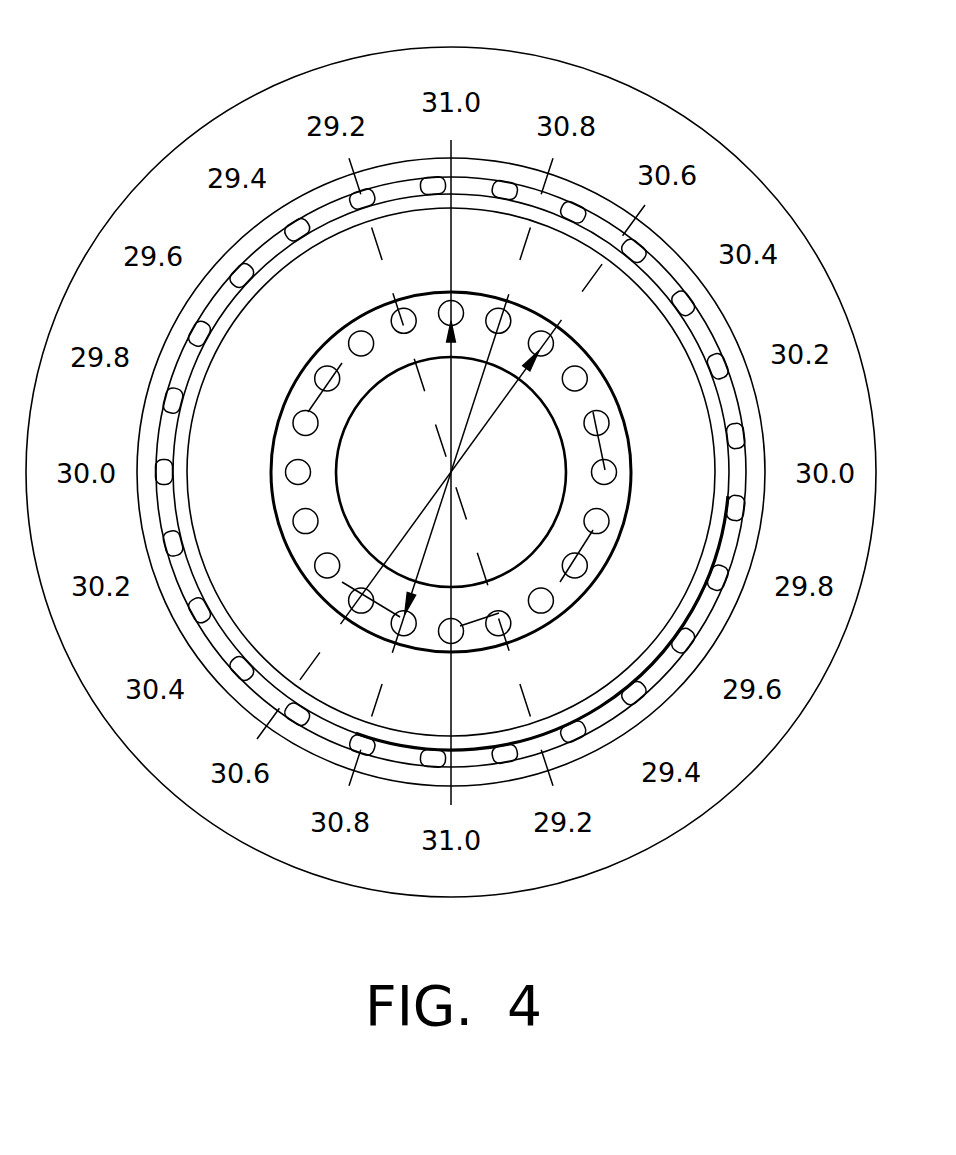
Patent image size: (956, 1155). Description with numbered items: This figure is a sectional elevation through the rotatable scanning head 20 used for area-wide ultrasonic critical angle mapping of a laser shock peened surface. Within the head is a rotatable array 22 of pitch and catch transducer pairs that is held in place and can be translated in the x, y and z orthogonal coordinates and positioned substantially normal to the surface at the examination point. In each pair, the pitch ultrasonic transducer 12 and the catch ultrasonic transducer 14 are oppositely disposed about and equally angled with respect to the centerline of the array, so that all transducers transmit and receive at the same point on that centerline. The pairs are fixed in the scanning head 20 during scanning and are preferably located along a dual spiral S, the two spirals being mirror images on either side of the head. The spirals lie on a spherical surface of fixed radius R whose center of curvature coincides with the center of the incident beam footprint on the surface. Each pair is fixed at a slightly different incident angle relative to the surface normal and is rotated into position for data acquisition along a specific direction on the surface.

The rotatable scanning head 20 is at (794, 107).
The rotatable array 22 is at (316, 376).
The pitch ultrasonic transducer 12 is at (448, 316).
The catch ultrasonic transducer 14 is at (443, 631).
The dual spiral S is at (600, 423).
The fixed radius R is at (451, 409).